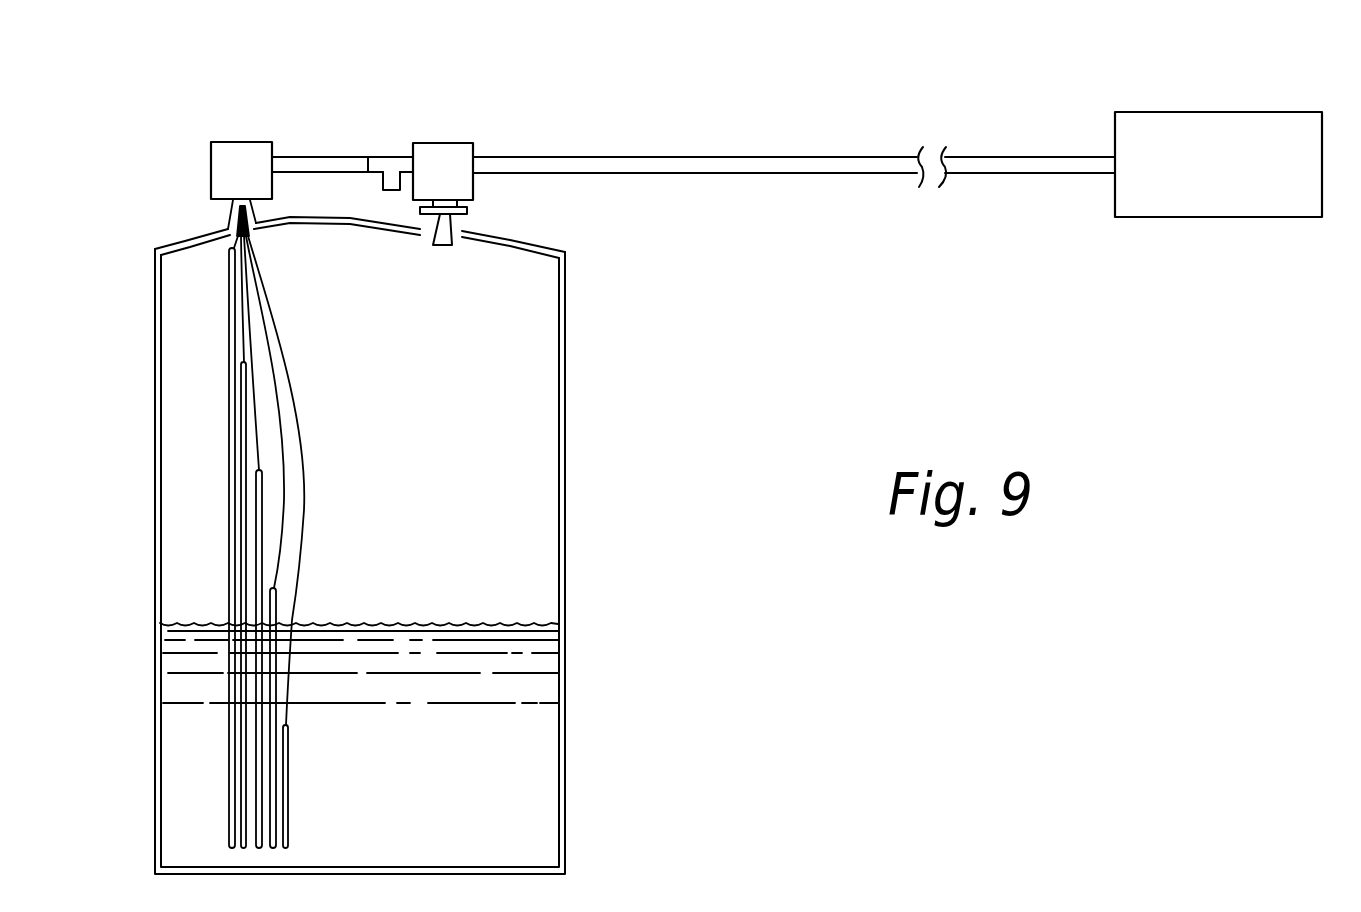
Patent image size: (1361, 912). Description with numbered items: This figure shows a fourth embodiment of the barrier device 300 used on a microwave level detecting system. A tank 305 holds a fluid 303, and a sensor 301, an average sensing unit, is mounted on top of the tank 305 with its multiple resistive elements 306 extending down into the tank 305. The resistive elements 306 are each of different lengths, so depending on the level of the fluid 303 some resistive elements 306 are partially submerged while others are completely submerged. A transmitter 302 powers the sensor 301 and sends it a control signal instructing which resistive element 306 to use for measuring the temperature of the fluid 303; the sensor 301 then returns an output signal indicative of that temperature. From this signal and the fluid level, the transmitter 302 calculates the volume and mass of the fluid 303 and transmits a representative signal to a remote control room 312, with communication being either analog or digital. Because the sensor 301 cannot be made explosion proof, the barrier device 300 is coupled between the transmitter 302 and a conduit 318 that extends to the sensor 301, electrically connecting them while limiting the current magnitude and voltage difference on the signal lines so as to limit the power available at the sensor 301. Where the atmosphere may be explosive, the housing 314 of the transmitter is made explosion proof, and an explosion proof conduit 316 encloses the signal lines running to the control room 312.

The barrier device 300 is at (380, 155).
The sensor 301 is at (222, 141).
The transmitter 302 is at (453, 142).
The fluid 303 is at (495, 625).
The tank 305 is at (565, 400).
The resistive elements 306 is at (212, 542).
The control room 312 is at (1250, 112).
The housing 314 is at (473, 187).
The explosion proof conduit 316 is at (748, 157).
The conduit 318 is at (302, 155).